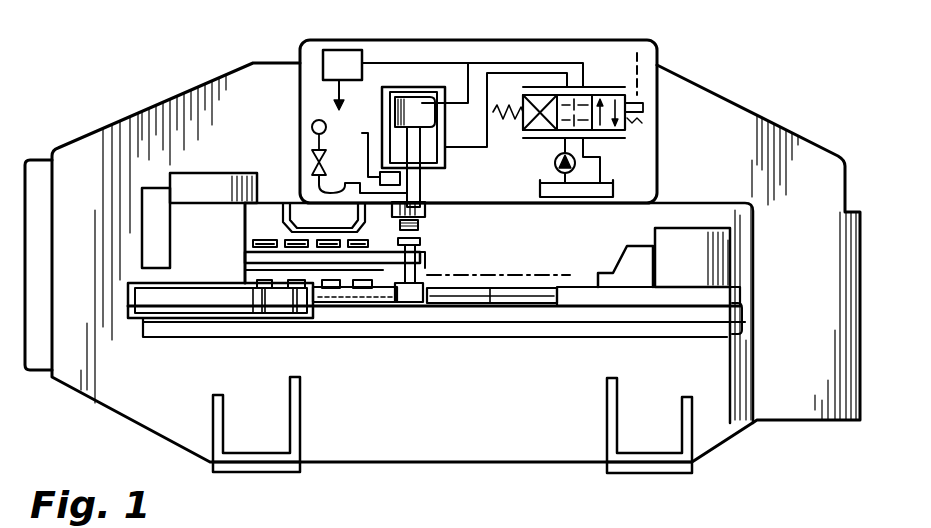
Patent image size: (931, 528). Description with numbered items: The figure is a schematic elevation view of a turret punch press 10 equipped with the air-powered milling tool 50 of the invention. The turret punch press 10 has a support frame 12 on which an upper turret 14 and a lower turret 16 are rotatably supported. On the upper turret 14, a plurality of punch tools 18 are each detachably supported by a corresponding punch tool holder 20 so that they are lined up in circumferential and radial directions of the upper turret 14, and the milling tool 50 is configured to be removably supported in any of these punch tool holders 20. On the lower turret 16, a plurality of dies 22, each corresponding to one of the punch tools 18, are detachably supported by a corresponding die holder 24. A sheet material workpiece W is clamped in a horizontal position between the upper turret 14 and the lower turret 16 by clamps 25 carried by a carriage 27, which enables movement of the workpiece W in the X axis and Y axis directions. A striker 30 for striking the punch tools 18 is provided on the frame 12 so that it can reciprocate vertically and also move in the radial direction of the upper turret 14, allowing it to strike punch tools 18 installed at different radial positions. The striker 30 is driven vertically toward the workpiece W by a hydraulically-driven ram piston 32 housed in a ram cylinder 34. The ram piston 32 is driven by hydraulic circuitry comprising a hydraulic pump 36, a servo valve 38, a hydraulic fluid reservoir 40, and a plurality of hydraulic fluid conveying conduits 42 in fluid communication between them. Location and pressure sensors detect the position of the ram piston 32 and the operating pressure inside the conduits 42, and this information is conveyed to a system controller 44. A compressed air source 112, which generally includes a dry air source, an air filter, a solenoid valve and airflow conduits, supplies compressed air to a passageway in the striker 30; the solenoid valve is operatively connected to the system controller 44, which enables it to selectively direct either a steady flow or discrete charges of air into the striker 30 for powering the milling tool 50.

The turret punch press 10 is at (766, 110).
The support frame 12 is at (730, 432).
The upper turret 14 is at (246, 254).
The lower turret 16 is at (358, 300).
The punch tools 18 is at (262, 236).
The punch tool holder 20 is at (285, 203).
The dies 22 is at (264, 300).
The die holder 24 is at (410, 329).
The clamps 25 is at (614, 273).
The carriage 27 is at (706, 228).
The striker 30 is at (425, 228).
The ram piston 32 is at (445, 163).
The ram cylinder 34 is at (423, 91).
The hydraulic pump 36 is at (598, 87).
The servo valve 38 is at (555, 161).
The hydraulic fluid reservoir 40 is at (542, 192).
The hydraulic fluid conveying conduits 42 is at (618, 152).
The system controller 44 is at (348, 50).
The pneumatic milling tool 50 is at (405, 262).
The compressed air source 112 is at (313, 121).
The sheet material workpiece W is at (460, 272).